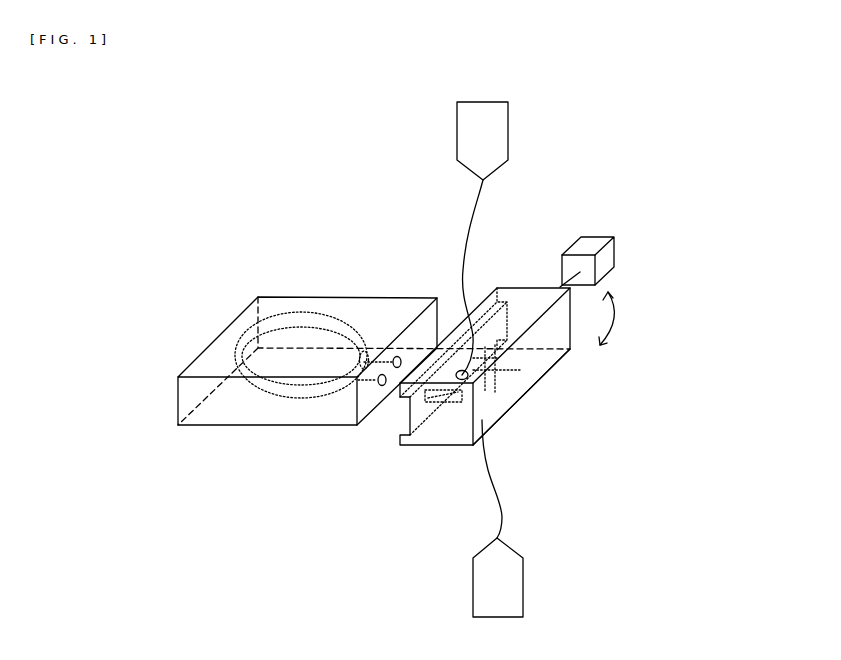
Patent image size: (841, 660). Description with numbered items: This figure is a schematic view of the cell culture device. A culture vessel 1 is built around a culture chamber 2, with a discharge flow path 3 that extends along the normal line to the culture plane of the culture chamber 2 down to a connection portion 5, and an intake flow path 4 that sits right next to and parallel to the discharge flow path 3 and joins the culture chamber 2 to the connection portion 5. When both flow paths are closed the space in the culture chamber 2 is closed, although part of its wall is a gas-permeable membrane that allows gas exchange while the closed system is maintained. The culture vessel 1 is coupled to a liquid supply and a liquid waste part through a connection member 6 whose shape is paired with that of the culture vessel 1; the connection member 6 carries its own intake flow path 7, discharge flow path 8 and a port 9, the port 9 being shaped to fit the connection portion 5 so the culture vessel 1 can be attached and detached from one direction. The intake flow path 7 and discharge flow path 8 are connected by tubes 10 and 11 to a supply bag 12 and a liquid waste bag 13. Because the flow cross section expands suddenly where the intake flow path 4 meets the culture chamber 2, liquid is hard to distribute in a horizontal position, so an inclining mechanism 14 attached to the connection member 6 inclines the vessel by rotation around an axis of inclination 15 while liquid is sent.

The culture vessel 1 is at (210, 363).
The culture chamber 2 is at (302, 355).
The discharge flow path 3 is at (372, 356).
The intake flow path 4 is at (353, 378).
The connection portion 5 is at (365, 386).
The connection member 6 is at (540, 355).
The intake flow path 7 is at (492, 400).
The discharge flow path 8 is at (490, 367).
The port 9 is at (425, 398).
The tube 10 is at (475, 218).
The tube 11 is at (495, 488).
The supply bag 12 is at (510, 122).
The liquid waste bag 13 is at (518, 588).
The inclining mechanism 14 is at (587, 250).
The axis of inclination 15 is at (573, 278).